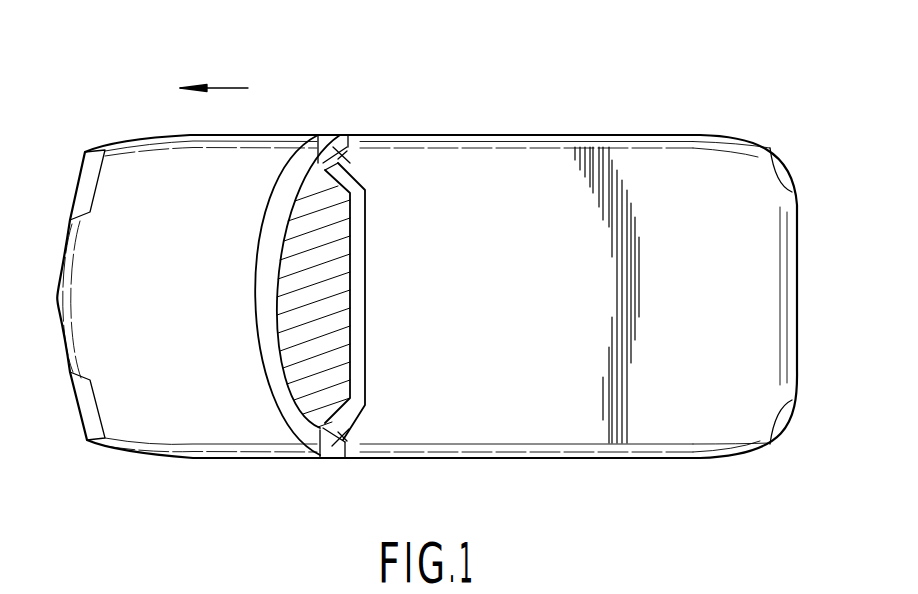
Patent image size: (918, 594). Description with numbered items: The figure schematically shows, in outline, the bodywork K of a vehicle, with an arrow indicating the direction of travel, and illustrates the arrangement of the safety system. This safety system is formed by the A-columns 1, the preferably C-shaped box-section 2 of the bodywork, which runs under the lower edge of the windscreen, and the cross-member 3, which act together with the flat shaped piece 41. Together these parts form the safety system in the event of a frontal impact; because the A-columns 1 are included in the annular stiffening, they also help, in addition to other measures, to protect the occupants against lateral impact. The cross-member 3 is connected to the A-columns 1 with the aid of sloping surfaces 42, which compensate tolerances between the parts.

The bodywork K is at (582, 135).
The A-columns 1 is at (330, 135).
The box-section 2 is at (292, 413).
The cross-member 3 is at (357, 285).
The flat shaped piece 41 is at (342, 225).
The sloping surfaces 42 is at (360, 163).